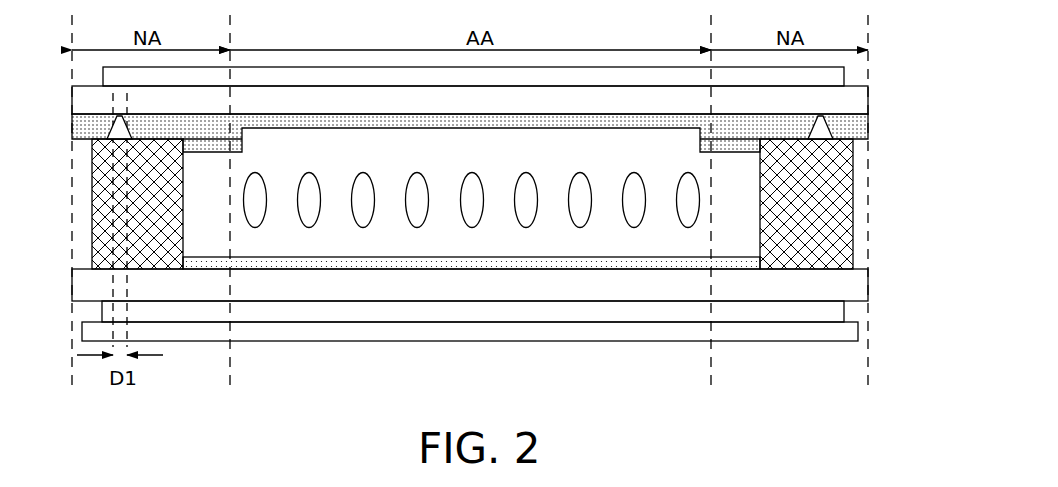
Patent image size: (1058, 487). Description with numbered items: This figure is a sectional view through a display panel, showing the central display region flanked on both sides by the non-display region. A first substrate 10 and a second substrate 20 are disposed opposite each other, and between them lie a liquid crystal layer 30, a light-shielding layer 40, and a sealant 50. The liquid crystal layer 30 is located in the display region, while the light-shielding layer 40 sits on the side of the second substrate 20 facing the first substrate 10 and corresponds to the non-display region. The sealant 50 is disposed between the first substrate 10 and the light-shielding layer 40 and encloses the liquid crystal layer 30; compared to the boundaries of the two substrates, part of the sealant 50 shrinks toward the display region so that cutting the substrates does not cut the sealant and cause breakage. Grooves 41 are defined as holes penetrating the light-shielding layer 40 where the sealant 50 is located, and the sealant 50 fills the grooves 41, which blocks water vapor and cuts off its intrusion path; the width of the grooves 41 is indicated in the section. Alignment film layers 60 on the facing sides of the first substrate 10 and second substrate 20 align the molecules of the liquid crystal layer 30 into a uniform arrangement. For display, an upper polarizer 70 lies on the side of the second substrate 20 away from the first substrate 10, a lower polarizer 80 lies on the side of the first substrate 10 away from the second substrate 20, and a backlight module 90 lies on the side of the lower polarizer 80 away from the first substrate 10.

The first substrate 10 is at (848, 292).
The second substrate 20 is at (853, 108).
The liquid crystal layer 30 is at (635, 208).
The light-shielding layer 40 is at (853, 133).
The grooves 41 is at (820, 122).
The sealant 50 is at (825, 225).
The alignment film layers 60 is at (495, 263).
The upper polarizer 70 is at (833, 78).
The lower polarizer 80 is at (828, 313).
The backlight module 90 is at (835, 330).